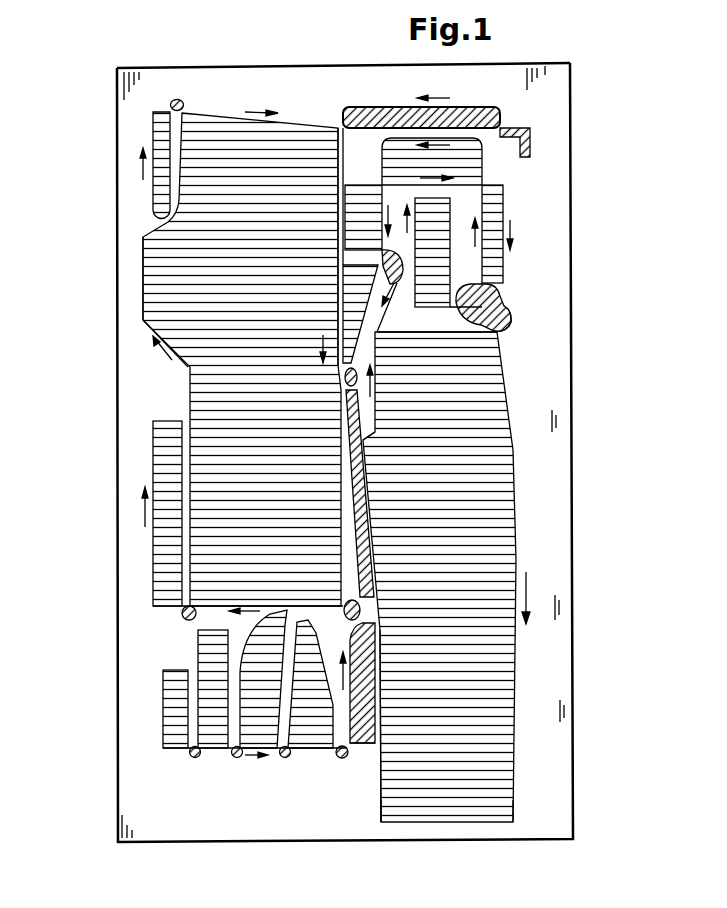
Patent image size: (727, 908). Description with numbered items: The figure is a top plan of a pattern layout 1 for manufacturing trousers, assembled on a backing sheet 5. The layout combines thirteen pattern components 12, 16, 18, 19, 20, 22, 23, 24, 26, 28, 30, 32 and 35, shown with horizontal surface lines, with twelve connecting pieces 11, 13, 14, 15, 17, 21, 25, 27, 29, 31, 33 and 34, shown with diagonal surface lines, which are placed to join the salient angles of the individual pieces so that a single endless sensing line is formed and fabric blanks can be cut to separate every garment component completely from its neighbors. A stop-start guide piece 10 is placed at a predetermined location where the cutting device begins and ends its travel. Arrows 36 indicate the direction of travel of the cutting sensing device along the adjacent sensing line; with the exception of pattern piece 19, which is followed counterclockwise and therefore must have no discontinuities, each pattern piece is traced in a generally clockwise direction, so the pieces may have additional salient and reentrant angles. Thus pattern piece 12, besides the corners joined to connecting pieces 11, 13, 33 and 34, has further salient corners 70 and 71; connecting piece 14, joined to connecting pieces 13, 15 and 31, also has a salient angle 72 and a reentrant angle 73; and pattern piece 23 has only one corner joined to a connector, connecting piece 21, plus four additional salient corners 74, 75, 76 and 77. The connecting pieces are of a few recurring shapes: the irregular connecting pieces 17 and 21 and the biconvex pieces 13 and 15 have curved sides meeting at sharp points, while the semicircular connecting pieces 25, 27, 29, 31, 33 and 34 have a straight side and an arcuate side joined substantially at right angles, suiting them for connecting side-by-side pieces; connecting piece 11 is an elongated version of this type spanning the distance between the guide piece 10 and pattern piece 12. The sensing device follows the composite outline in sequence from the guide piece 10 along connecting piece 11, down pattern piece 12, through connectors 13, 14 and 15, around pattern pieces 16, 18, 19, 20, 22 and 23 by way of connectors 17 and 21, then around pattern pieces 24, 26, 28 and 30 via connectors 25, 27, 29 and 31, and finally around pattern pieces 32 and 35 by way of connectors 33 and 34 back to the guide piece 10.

The pattern layout 1 is at (588, 86).
The backing sheet 5 is at (327, 68).
The stop-start guide piece 10 is at (530, 137).
The connecting piece 11 is at (473, 106).
The pattern component 12 is at (150, 290).
The connecting piece 13 is at (362, 607).
The connecting piece 14 is at (368, 712).
The connecting piece 15 is at (345, 378).
The pattern component 16 is at (338, 322).
The connecting piece 17 is at (400, 282).
The pattern component 18 is at (362, 188).
The pattern component 19 is at (475, 160).
The pattern component 20 is at (497, 202).
The connecting piece 21 is at (508, 326).
The pattern component 22 is at (480, 296).
The pattern component 23 is at (500, 718).
The pattern component 24 is at (170, 702).
The connecting piece 25 is at (192, 757).
The pattern component 26 is at (212, 650).
The connecting piece 27 is at (235, 758).
The pattern component 28 is at (265, 735).
The connecting piece 29 is at (292, 758).
The pattern component 30 is at (313, 735).
The connecting piece 31 is at (345, 762).
The pattern component 32 is at (160, 548).
The connecting piece 33 is at (182, 613).
The connecting piece 34 is at (177, 98).
The pattern component 35 is at (152, 128).
The arrows 36 is at (526, 575).
The salient corner 70 is at (143, 322).
The salient corner 71 is at (150, 240).
The salient angle 72 is at (367, 746).
The reentrant angle 73 is at (368, 630).
The salient corner 74 is at (512, 815).
The salient corner 75 is at (385, 823).
The salient corner 76 is at (364, 453).
The salient corner 77 is at (378, 346).